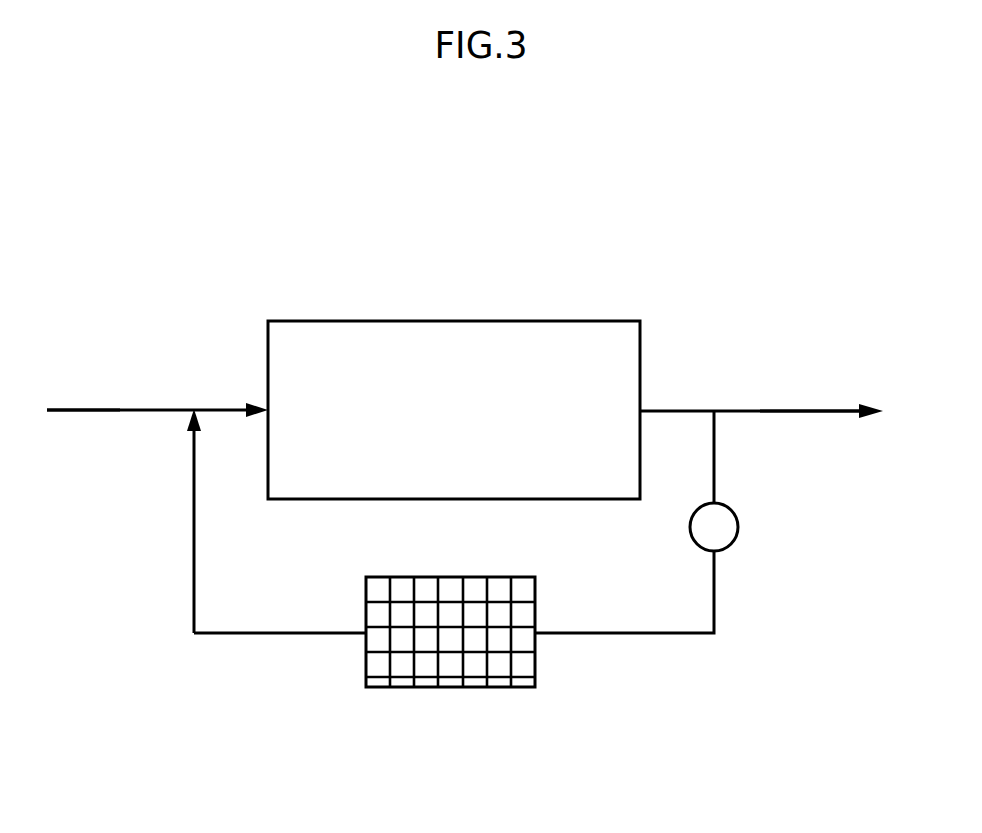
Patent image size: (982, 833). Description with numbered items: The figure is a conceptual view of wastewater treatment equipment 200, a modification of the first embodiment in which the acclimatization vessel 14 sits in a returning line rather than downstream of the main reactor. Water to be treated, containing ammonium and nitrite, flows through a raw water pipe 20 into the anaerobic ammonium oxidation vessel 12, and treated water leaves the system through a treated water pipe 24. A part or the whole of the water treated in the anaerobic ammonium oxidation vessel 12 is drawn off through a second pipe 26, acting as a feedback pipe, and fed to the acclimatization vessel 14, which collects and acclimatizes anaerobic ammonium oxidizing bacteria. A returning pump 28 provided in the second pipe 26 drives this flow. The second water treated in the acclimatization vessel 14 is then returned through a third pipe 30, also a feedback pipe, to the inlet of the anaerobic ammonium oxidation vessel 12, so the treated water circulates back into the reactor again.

The wastewater treatment equipment 200 is at (697, 245).
The anaerobic ammonium oxidation vessel 12 is at (462, 321).
The acclimatization vessel 14 is at (450, 689).
The raw water pipe 20 is at (107, 412).
The treated water pipe 24 is at (820, 414).
The second pipe 26 is at (634, 636).
The returning pump 28 is at (739, 533).
The third pipe 30 is at (193, 558).